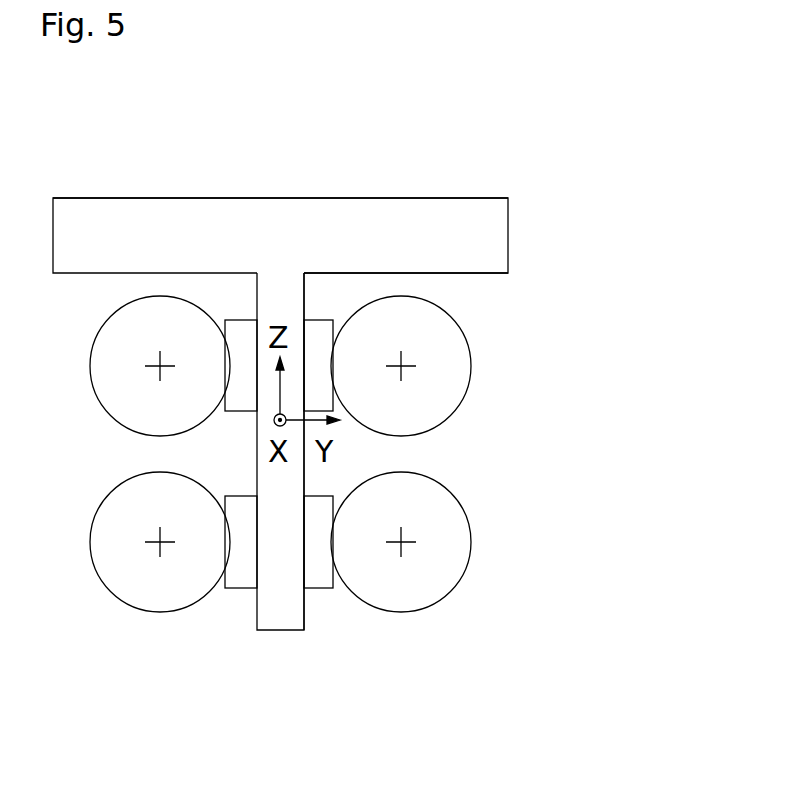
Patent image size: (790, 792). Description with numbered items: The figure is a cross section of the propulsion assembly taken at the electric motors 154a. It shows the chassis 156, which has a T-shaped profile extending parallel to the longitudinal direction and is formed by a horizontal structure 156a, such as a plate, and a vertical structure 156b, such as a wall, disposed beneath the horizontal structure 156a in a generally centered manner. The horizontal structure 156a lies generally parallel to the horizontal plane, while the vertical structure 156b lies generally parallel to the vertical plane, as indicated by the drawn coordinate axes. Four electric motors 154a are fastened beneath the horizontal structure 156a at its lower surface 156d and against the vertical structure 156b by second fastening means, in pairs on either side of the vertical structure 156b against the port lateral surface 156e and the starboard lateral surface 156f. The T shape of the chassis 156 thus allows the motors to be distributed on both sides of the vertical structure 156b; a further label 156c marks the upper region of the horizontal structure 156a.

The chassis 156 is at (362, 423).
The horizontal structure 156a is at (441, 213).
The vertical structure 156b is at (282, 605).
The top surface of bracket 156c is at (163, 198).
The lower surface 156d is at (487, 273).
The port lateral surface 156e is at (304, 607).
The starboard lateral surface 156f is at (255, 595).
The electric motor 154a is at (420, 412).